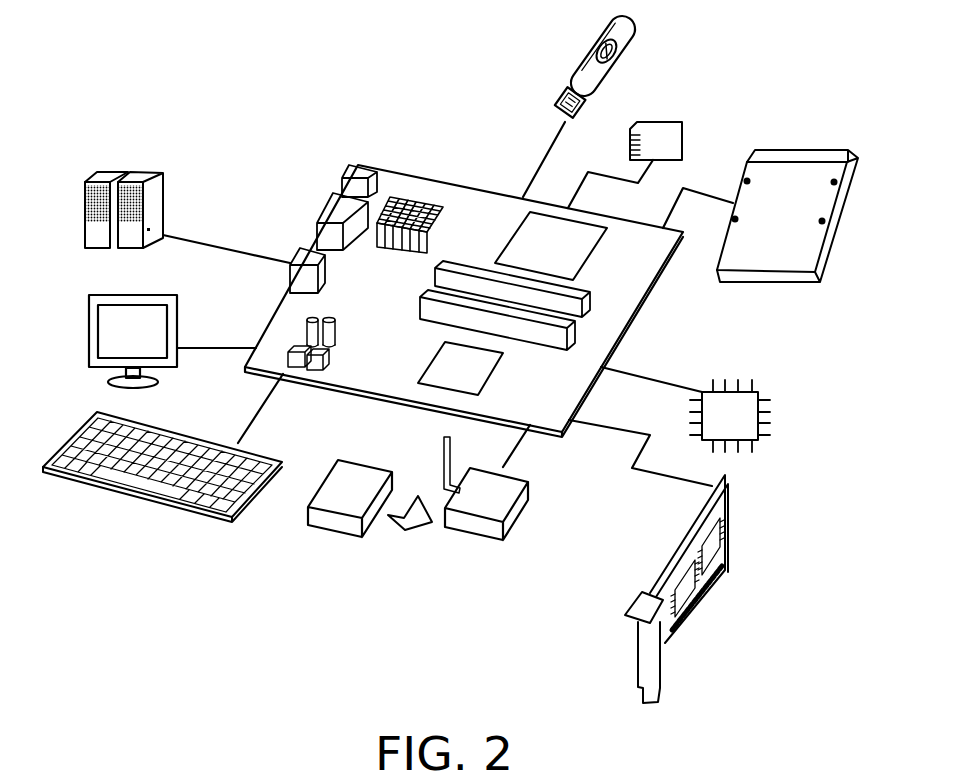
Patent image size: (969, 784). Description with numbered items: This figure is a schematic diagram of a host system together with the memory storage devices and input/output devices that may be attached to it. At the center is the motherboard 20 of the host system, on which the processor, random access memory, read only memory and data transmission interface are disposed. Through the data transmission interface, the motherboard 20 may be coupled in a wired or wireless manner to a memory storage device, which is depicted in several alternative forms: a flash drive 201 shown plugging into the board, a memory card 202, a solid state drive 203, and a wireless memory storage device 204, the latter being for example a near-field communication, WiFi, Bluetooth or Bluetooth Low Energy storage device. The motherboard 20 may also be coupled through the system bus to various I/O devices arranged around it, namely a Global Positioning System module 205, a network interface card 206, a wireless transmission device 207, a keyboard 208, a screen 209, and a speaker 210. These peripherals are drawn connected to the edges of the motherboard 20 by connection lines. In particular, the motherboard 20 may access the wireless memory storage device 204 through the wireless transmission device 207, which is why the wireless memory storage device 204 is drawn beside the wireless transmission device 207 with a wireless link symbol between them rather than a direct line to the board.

The motherboard 20 is at (465, 205).
The flash drive 201 is at (585, 62).
The memory card 202 is at (684, 130).
The solid state drive 203 is at (803, 150).
The wireless memory storage device 204 is at (331, 470).
The Global Positioning System module 205 is at (772, 412).
The network interface card 206 is at (731, 537).
The wireless transmission device 207 is at (524, 520).
The keyboard 208 is at (170, 503).
The screen 209 is at (88, 350).
The speaker 210 is at (85, 235).